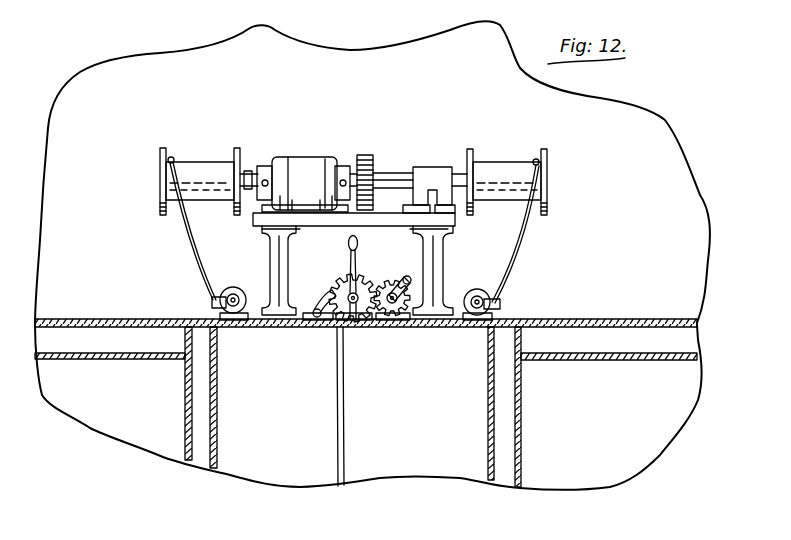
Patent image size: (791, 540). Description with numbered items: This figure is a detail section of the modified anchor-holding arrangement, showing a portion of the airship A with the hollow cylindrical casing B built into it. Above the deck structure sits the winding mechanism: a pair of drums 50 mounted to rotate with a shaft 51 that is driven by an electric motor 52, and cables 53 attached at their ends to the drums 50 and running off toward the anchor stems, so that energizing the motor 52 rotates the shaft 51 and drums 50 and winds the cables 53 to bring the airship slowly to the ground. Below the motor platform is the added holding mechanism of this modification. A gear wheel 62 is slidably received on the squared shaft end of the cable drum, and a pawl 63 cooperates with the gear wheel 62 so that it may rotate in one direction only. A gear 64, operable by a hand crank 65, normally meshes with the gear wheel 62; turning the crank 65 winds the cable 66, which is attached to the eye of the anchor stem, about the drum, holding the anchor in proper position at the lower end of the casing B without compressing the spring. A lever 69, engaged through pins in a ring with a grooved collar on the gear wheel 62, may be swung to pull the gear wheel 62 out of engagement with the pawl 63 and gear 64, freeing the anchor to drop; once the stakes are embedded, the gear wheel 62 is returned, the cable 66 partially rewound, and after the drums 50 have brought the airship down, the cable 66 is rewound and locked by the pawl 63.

The drum 50 is at (208, 172).
The shaft 51 is at (390, 182).
The electric motor 52 is at (303, 175).
The cable 53 is at (525, 244).
The gear wheel 62 is at (338, 279).
The pawl 63 is at (319, 309).
The gear 64 is at (383, 286).
The hand crank 65 is at (410, 282).
The cable 66 is at (339, 412).
The lever 69 is at (359, 264).
The airship A is at (85, 268).
The casing B is at (218, 383).